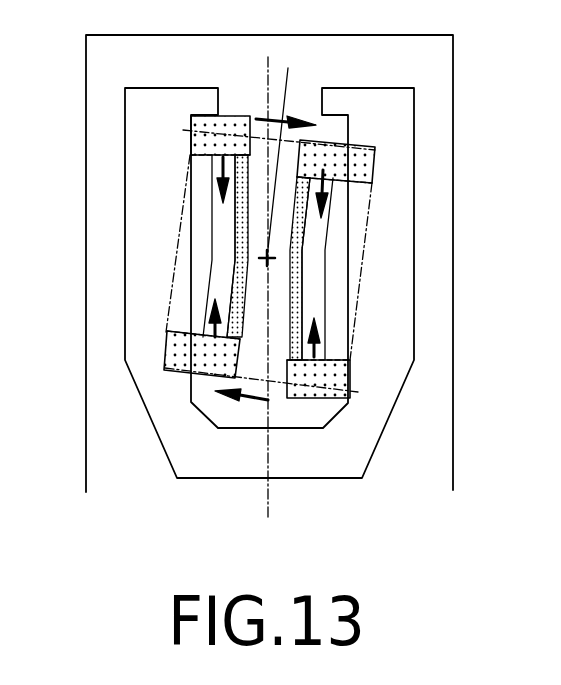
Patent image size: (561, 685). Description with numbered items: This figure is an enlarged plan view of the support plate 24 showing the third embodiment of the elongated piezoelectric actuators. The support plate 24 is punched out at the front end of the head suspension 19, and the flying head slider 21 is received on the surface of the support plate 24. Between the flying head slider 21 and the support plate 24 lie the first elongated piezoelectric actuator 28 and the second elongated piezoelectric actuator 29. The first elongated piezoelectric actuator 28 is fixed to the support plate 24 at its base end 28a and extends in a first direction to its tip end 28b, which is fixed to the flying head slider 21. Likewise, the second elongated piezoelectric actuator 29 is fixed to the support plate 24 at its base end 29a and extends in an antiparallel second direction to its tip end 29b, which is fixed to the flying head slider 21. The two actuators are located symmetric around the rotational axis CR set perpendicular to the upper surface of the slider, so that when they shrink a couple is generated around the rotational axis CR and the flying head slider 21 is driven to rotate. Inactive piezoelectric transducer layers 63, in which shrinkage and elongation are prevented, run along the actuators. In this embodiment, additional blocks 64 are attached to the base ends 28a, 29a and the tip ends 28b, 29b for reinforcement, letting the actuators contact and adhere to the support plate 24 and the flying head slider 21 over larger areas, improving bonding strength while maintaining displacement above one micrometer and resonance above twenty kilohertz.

The head suspension 19 is at (90, 183).
The flying head slider 21 is at (211, 378).
The support plate 24 is at (359, 110).
The first elongated piezoelectric actuator 28 is at (212, 200).
The base end 28a is at (233, 120).
The tip end 28b is at (208, 352).
The second elongated piezoelectric actuator 29 is at (325, 283).
The base end 29a is at (304, 386).
The tip end 29b is at (318, 147).
The inactive piezoelectric transducer layer 63 is at (234, 240).
The additional block 64 is at (192, 130).
The rotational axis CR is at (267, 258).